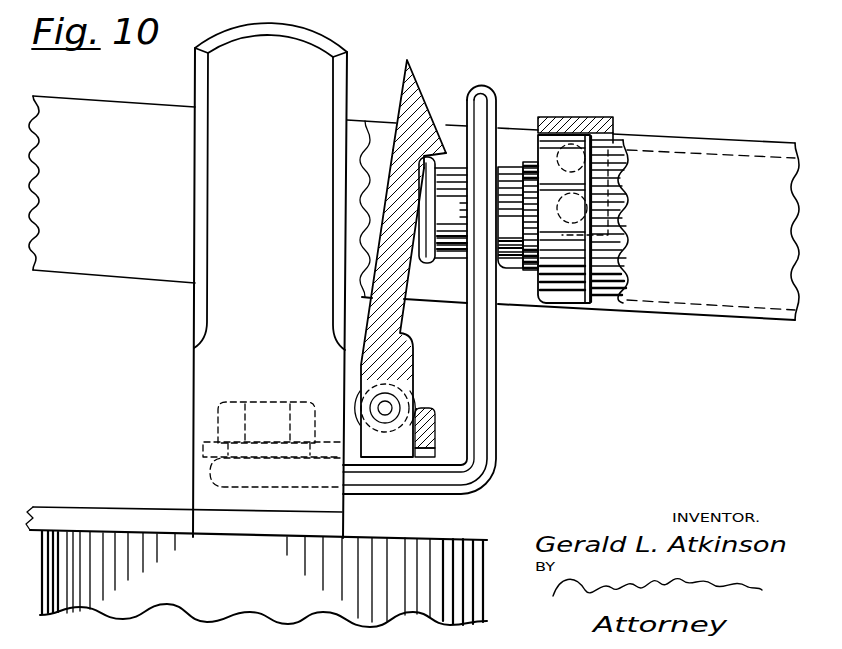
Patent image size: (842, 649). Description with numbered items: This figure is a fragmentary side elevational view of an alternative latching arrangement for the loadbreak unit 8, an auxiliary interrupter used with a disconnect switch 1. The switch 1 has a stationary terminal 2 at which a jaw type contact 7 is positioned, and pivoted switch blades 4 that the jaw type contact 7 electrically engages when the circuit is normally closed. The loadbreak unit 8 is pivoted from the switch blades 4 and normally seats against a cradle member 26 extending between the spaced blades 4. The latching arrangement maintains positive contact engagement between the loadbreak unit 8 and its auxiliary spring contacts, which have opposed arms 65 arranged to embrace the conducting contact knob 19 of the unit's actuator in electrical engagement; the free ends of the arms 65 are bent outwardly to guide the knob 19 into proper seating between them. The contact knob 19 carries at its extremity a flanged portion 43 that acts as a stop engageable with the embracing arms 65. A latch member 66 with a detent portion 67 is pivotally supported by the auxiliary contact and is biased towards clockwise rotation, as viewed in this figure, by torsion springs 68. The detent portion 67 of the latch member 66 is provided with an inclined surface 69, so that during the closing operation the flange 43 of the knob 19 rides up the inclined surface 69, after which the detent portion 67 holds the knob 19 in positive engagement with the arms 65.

The switch 1 is at (663, 328).
The stationary terminal 2 is at (122, 520).
The switch blade 4 is at (512, 295).
The jaw type contact 7 is at (290, 52).
The loadbreak unit 8 is at (602, 310).
The contact knob 19 is at (486, 216).
The cradle member 26 is at (585, 118).
The flanged portion 43 is at (424, 262).
The arms 65 is at (480, 404).
The latch member 66 is at (385, 305).
The detent portion 67 is at (433, 150).
The torsion spring 68 is at (360, 395).
The inclined surface 69 is at (417, 78).